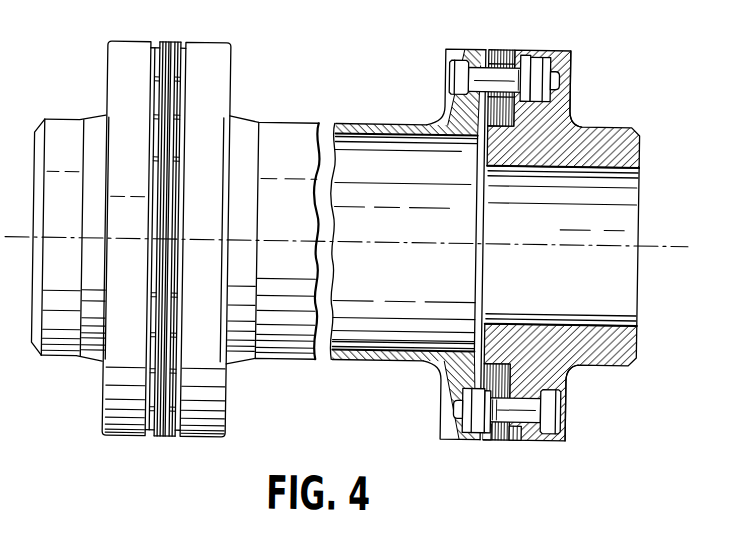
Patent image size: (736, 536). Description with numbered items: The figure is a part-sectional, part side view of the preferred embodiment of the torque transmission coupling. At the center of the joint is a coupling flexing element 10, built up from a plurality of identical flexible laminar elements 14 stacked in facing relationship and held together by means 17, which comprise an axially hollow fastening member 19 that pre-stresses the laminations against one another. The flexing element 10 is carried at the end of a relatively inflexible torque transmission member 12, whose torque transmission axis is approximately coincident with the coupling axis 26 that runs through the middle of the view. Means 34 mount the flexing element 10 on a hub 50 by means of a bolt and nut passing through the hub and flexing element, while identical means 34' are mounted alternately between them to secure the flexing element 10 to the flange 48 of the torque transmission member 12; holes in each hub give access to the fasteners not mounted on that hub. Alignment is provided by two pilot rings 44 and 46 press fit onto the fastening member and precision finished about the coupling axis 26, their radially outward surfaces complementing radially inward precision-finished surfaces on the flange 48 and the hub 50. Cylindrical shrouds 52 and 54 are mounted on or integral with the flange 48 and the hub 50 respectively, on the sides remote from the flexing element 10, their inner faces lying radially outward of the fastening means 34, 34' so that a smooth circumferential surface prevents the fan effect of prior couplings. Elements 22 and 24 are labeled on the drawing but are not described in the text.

The coupling flexing element 10 is at (485, 242).
The torque transmission member 12 is at (384, 122).
The flexible laminar element 14 is at (506, 439).
The means for holding laminar elements together 17 is at (517, 48).
The axially hollow fastening member 19 is at (492, 46).
The bushing flange 22 is at (491, 439).
The bushing collar 24 is at (520, 439).
The coupling axis 26 is at (674, 241).
The means for mounting the flexing elements on the hubs 34 is at (522, 52).
The means for mounting the flexing elements on the hubs 34' is at (478, 407).
The pilot ring 44 is at (476, 46).
The pilot ring 46 is at (535, 52).
The flange of the torque transmission member 48 is at (456, 47).
The hub 50 is at (568, 49).
The cylindrical shroud 52 is at (444, 48).
The cylindrical shroud 54 is at (569, 58).